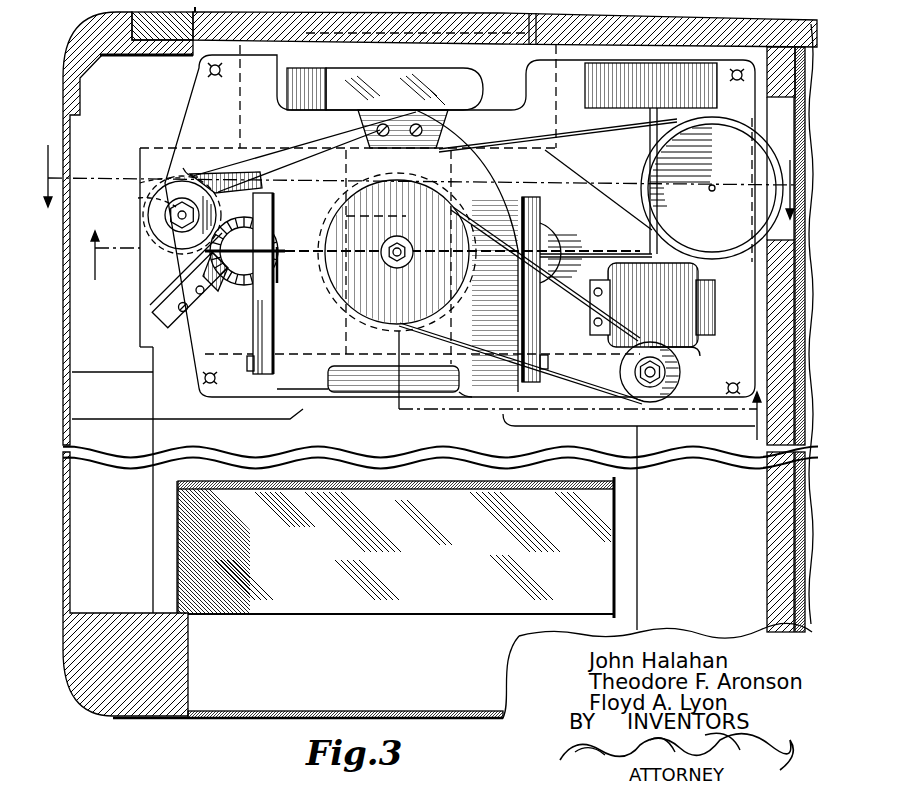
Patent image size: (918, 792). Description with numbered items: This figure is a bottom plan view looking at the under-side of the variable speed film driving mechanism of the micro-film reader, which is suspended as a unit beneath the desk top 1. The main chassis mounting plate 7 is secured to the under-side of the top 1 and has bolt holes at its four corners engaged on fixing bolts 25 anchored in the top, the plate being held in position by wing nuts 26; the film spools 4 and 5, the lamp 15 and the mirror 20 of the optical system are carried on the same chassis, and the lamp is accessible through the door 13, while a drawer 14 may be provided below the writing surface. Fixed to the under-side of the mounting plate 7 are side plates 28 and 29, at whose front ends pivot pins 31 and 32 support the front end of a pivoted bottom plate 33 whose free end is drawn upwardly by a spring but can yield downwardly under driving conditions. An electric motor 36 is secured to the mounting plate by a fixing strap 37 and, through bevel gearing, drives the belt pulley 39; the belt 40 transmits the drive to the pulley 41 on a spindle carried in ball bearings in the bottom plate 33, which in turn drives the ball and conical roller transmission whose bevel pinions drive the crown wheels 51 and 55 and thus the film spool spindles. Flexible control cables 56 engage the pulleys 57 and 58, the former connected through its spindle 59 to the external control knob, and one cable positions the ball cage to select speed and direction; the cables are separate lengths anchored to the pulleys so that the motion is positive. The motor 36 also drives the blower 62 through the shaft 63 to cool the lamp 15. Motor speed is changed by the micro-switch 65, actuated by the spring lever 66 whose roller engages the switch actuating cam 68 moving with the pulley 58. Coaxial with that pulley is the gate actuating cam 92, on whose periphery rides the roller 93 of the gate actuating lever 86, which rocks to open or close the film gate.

The top 1 is at (80, 334).
The film spool 4 is at (414, 171).
The film spool 5 is at (424, 339).
The mounting plate 7 is at (188, 123).
The door 13 is at (448, 18).
The drawer 14 is at (805, 18).
The lamp 15 is at (395, 76).
The mirror 20 is at (534, 481).
The fixing bolts 25 is at (206, 71).
The wing nuts 26 is at (214, 78).
The side plate 28 is at (252, 306).
The side plate 29 is at (530, 388).
The pivot pin 31 is at (250, 372).
The pivot pin 32 is at (548, 362).
The bottom plate 33 is at (495, 178).
The electric motor 36 is at (704, 352).
The fixing strap 37 is at (712, 297).
The belt pulley 39 is at (681, 375).
The belt 40 is at (604, 392).
The pulley 41 is at (335, 285).
The crown wheel 51 is at (564, 226).
The crown wheel 55 is at (240, 220).
The flexible control cables 56 is at (502, 140).
The pulley 57 is at (648, 176).
The pulley 58 is at (147, 215).
The spindle 59 is at (713, 192).
The blower 62 is at (638, 86).
The shaft 63 is at (648, 140).
The micro-switch 65 is at (172, 311).
The spring lever 66 is at (180, 274).
The switch actuating cam 68 is at (148, 185).
The gate actuating lever 86 is at (220, 172).
The gate actuating cam 92 is at (135, 198).
The roller 93 is at (178, 172).